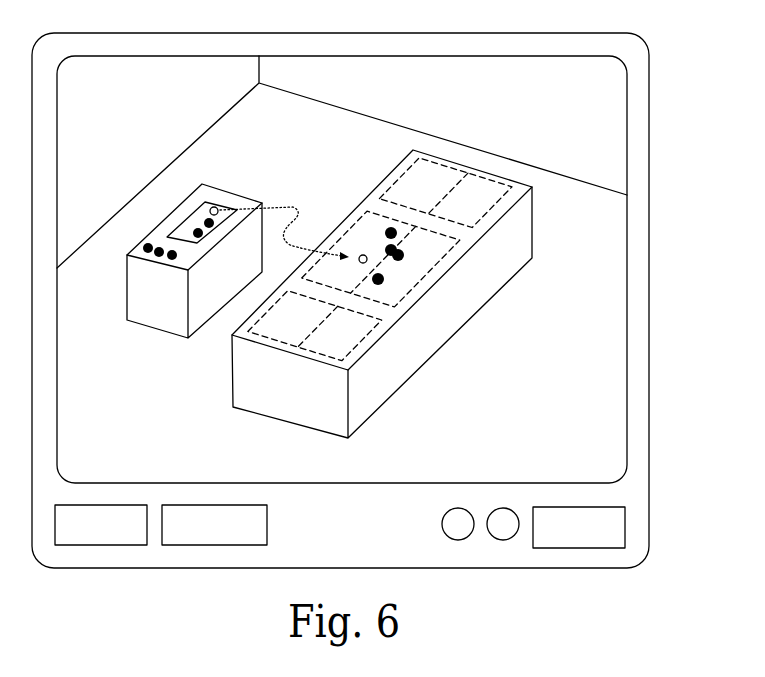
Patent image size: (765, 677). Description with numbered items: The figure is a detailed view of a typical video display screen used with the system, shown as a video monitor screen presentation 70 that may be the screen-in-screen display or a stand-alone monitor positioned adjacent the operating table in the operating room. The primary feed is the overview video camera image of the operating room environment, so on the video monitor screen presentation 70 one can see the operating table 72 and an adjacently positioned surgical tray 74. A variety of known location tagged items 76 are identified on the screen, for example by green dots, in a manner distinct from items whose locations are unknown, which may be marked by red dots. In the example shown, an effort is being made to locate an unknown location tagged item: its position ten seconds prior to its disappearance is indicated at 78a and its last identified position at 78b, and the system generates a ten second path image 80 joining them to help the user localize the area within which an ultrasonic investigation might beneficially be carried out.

The video monitor screen presentation 70 is at (649, 352).
The operating table 72 is at (413, 373).
The surgical tray 74 is at (182, 223).
The known location tagged items 76 is at (409, 254).
The unknown location tagged item position ten seconds prior to disappearance 78a is at (222, 205).
The last identified position of unknown location tagged item 78b is at (358, 251).
The ten second path image 80 is at (288, 203).